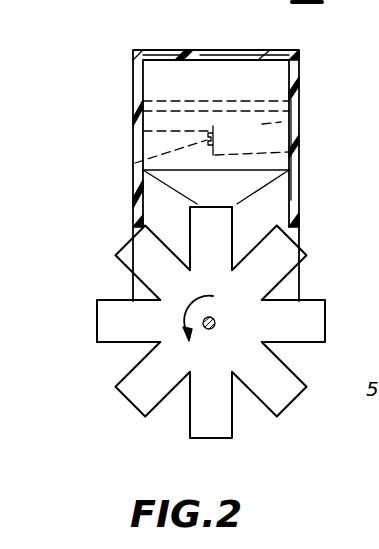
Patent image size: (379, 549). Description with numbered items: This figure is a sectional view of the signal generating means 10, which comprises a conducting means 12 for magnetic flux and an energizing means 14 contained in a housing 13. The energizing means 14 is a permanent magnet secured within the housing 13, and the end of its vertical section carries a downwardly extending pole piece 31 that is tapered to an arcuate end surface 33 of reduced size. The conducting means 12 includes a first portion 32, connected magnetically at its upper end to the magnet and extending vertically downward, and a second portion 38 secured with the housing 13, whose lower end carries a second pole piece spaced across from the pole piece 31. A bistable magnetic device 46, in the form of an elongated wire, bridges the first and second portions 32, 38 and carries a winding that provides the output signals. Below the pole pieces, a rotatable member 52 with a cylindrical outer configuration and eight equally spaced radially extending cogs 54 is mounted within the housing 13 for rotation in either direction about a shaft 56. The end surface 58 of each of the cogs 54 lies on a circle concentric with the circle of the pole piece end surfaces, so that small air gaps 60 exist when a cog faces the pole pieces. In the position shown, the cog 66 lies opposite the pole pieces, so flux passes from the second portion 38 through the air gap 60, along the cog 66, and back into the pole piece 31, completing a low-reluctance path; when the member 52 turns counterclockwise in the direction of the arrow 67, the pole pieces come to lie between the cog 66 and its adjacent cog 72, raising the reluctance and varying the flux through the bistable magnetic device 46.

The signal generating means 10 is at (345, 70).
The conducting means 12 is at (290, 158).
The housing 13 is at (175, 48).
The energizing means 14 is at (233, 68).
The pole piece 31 is at (173, 188).
The first portion 32 is at (289, 121).
The arcuate end surface 33 is at (212, 204).
The second portion 38 is at (143, 133).
The bistable magnetic device 46 is at (136, 162).
The rotatable member 52 is at (107, 312).
The cogs 54 is at (307, 331).
The shaft 56 is at (214, 330).
The end surface 58 is at (300, 402).
The air gaps 60 is at (190, 208).
The cog 66 is at (233, 240).
The arrow 67 is at (183, 312).
The adjacent cog 72 is at (288, 257).